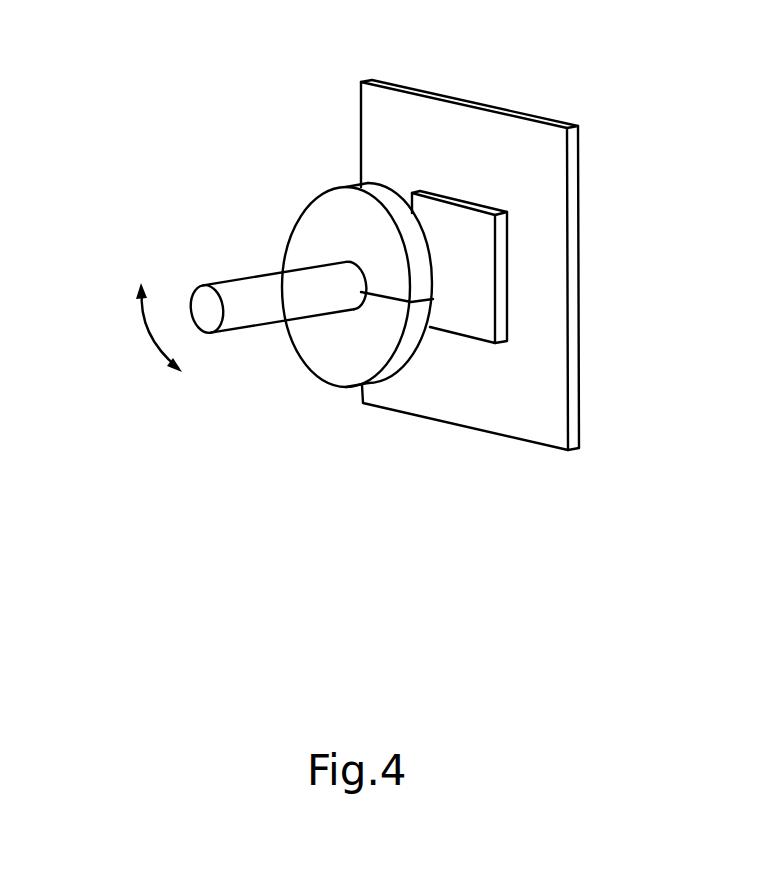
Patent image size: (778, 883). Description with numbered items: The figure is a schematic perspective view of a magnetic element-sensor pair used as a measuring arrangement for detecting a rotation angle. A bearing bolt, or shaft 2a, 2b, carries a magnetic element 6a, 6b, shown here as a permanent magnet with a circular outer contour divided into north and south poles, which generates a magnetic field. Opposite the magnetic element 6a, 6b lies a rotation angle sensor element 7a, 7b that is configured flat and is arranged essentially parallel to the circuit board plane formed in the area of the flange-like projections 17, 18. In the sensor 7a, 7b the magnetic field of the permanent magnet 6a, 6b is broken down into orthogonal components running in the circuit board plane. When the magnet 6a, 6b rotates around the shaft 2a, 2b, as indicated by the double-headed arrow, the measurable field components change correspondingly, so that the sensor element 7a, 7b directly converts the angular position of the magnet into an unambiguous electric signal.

The flange-like projection 17 is at (554, 236).
The flange-like projection 18 is at (510, 150).
The rotation angle sensor element 7a is at (542, 394).
The rotation angle sensor element 7b is at (470, 305).
The magnetic element 6a is at (280, 392).
The magnetic element 6b is at (352, 358).
The bearing bolt 2a is at (198, 393).
The bearing bolt 2b is at (263, 303).